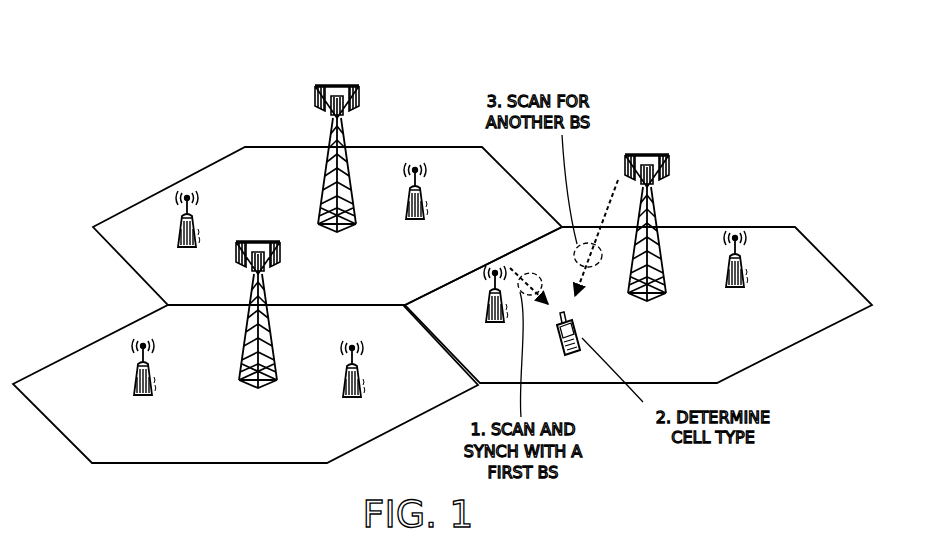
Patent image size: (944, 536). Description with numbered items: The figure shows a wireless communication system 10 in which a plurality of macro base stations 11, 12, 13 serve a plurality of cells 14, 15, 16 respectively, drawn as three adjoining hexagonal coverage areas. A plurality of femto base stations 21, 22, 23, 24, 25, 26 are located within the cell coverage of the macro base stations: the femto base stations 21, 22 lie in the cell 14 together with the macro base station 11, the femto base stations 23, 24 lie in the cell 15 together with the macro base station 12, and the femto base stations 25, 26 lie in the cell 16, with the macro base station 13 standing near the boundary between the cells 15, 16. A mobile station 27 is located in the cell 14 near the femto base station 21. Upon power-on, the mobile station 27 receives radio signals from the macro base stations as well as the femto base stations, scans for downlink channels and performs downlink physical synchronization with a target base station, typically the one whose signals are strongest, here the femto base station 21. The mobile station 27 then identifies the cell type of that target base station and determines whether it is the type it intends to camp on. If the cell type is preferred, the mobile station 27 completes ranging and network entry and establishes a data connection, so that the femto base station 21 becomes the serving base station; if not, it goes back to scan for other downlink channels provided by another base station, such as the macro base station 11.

The wireless communication system 10 is at (169, 34).
The macro base station 11 is at (652, 152).
The macro base station 12 is at (337, 84).
The macro base station 13 is at (261, 240).
The cell 14 is at (835, 315).
The cell 15 is at (143, 236).
The cell 16 is at (78, 396).
The femto base station 21 is at (495, 323).
The femto base station 22 is at (735, 288).
The femto base station 23 is at (415, 220).
The femto base station 24 is at (187, 248).
The femto base station 25 is at (351, 398).
The femto base station 26 is at (143, 396).
The mobile station 27 is at (572, 344).